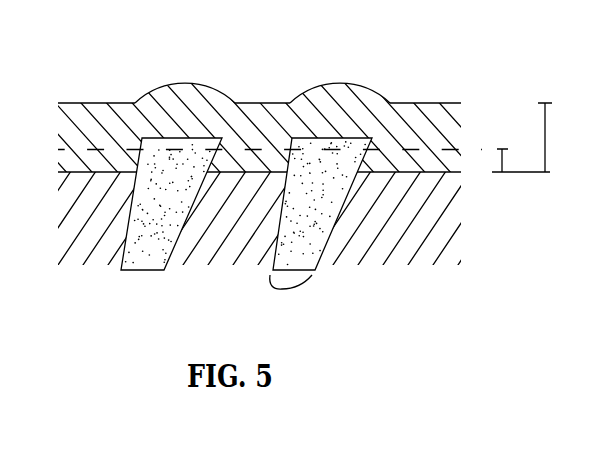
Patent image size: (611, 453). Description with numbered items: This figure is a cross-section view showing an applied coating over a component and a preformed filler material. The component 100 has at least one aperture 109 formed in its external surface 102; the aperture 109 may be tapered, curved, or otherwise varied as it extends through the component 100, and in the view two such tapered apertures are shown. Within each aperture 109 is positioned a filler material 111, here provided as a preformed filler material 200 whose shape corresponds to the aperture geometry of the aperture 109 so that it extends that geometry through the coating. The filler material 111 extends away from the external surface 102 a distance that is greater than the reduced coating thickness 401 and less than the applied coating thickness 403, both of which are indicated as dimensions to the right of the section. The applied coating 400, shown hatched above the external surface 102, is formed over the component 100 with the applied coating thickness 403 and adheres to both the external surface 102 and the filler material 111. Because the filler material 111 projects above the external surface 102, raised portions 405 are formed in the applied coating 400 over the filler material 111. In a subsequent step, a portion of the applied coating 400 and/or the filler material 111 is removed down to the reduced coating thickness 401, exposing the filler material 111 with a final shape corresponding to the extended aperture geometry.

The component 100 is at (378, 250).
The external surface 102 is at (432, 175).
The aperture 109 is at (282, 289).
The filler material 111 is at (183, 160).
The preformed filler material 200 is at (153, 138).
The applied coating 400 is at (388, 118).
The reduced coating thickness 401 is at (502, 160).
The applied coating thickness 403 is at (545, 138).
The raised portions 405 is at (183, 83).